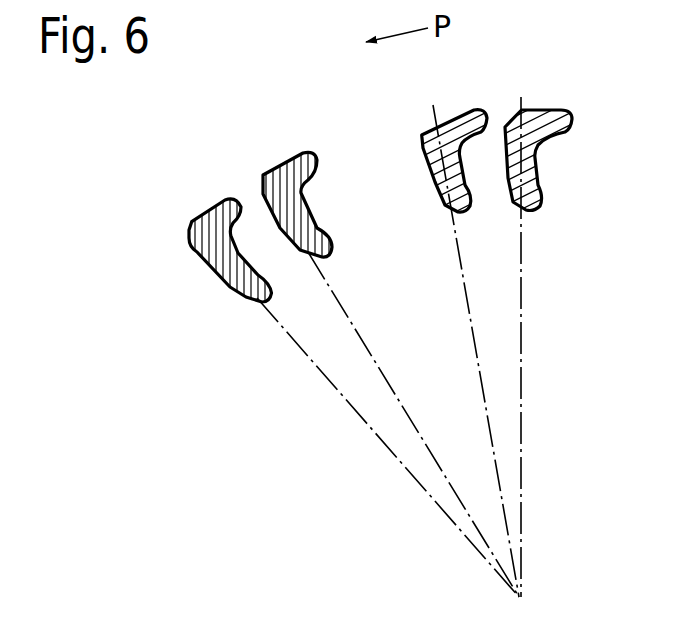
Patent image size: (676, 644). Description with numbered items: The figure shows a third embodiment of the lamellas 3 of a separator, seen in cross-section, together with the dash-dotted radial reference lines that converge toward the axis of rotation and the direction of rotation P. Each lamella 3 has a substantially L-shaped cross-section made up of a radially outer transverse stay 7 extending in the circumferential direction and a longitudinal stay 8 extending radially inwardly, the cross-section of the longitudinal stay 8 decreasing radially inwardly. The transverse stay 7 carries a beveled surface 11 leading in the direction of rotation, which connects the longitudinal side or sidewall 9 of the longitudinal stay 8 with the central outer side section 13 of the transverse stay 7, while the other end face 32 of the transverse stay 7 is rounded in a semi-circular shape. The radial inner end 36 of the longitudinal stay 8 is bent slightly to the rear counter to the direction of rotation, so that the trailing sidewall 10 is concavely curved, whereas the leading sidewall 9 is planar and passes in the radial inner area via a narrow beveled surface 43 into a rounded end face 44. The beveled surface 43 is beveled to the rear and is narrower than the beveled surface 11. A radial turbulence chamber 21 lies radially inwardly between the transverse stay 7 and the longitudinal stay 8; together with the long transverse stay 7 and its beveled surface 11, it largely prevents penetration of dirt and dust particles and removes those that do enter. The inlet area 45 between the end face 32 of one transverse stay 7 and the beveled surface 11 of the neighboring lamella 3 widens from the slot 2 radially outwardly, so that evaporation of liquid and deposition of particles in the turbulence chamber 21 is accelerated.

The slot 2 is at (250, 207).
The lamella 3 is at (284, 161).
The transverse stay 7 is at (305, 168).
The longitudinal stay 8 is at (527, 180).
The sidewall 9 is at (203, 263).
The sidewall 10 is at (235, 253).
The leading beveled surface 11 is at (192, 238).
The central section 13 is at (215, 222).
The turbulence chamber 21 is at (301, 194).
The end face 32 is at (238, 197).
The radial inner end 36 is at (257, 300).
The beveled surface 43 is at (255, 300).
The rounded end face 44 is at (258, 297).
The inlet area 45 is at (450, 158).